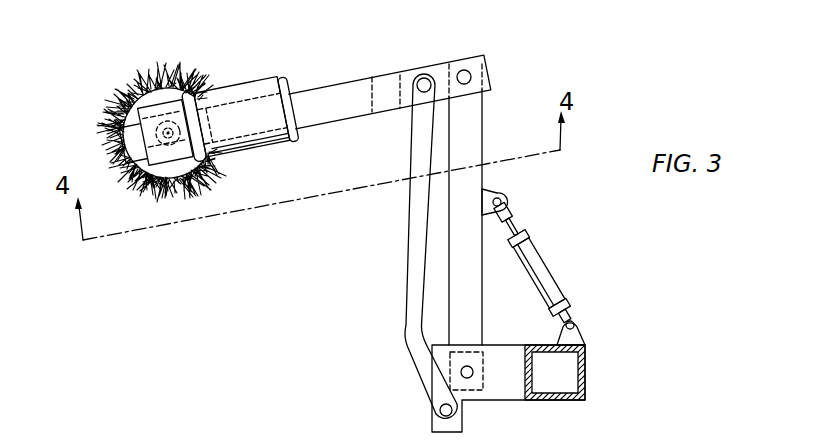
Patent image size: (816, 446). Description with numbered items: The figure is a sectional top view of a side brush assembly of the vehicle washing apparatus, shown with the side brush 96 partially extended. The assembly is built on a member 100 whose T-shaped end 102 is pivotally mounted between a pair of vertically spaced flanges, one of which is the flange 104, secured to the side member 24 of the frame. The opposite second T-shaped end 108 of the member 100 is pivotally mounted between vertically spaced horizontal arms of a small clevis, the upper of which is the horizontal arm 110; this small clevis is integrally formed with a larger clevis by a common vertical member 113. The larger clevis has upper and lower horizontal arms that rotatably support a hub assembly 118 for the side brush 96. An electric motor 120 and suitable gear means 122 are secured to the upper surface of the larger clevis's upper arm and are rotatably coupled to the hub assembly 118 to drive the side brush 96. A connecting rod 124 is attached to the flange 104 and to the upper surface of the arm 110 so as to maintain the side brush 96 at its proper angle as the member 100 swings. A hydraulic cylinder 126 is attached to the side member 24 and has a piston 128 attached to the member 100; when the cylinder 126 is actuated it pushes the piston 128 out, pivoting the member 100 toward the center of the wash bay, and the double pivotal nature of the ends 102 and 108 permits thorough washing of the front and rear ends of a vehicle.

The side member 24 is at (588, 380).
The side brush 96 is at (150, 114).
The member 100 is at (470, 133).
The T-shaped end 102 is at (485, 377).
The flange 104 is at (507, 344).
The second T-shaped end 108 is at (490, 80).
The horizontal arm 110 is at (438, 65).
The common vertical member 113 is at (402, 77).
The hub assembly 118 is at (133, 86).
The electric motor 120 is at (267, 78).
The gear means 122 is at (170, 160).
The connecting rod 124 is at (405, 247).
The hydraulic cylinder 126 is at (556, 281).
The piston 128 is at (517, 226).